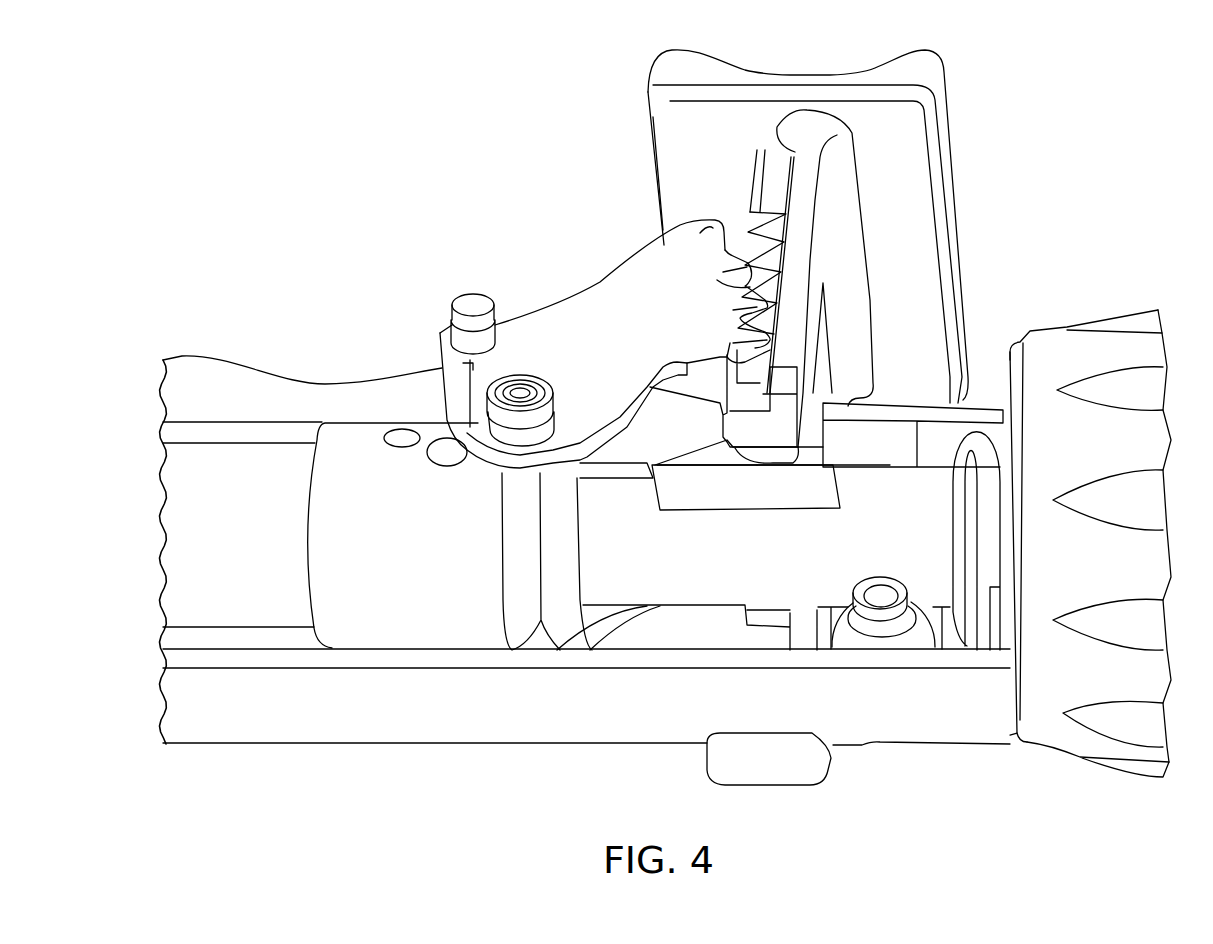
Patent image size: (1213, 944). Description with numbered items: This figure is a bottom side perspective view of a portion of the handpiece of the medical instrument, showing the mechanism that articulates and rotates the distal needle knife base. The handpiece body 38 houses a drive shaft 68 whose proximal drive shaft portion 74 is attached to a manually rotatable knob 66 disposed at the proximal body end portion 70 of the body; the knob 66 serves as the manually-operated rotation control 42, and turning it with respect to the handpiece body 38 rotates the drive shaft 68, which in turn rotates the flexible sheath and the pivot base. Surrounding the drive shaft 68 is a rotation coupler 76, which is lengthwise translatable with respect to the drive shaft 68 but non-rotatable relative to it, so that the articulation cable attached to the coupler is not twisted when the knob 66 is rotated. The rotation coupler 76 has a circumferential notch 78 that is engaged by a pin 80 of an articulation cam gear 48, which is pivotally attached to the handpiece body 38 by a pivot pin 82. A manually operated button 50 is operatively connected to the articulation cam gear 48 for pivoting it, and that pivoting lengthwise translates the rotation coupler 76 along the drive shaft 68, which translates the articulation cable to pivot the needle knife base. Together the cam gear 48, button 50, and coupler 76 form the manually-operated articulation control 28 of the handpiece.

The manually-operated articulation control 28 is at (955, 75).
The handpiece body 38 is at (270, 744).
The manually-operated rotation control 42 is at (1060, 760).
The articulation cam gear 48 is at (612, 275).
The manually operated button 50 is at (953, 168).
The manually rotatable knob 66 is at (1137, 760).
The drive shaft 68 is at (688, 580).
The proximal body end portion 70 is at (990, 744).
The proximal drive shaft portion 74 is at (940, 545).
The rotation coupler 76 is at (246, 478).
The circumferential notch 78 is at (517, 532).
The pin 80 is at (528, 385).
The pivot pin 82 is at (468, 304).